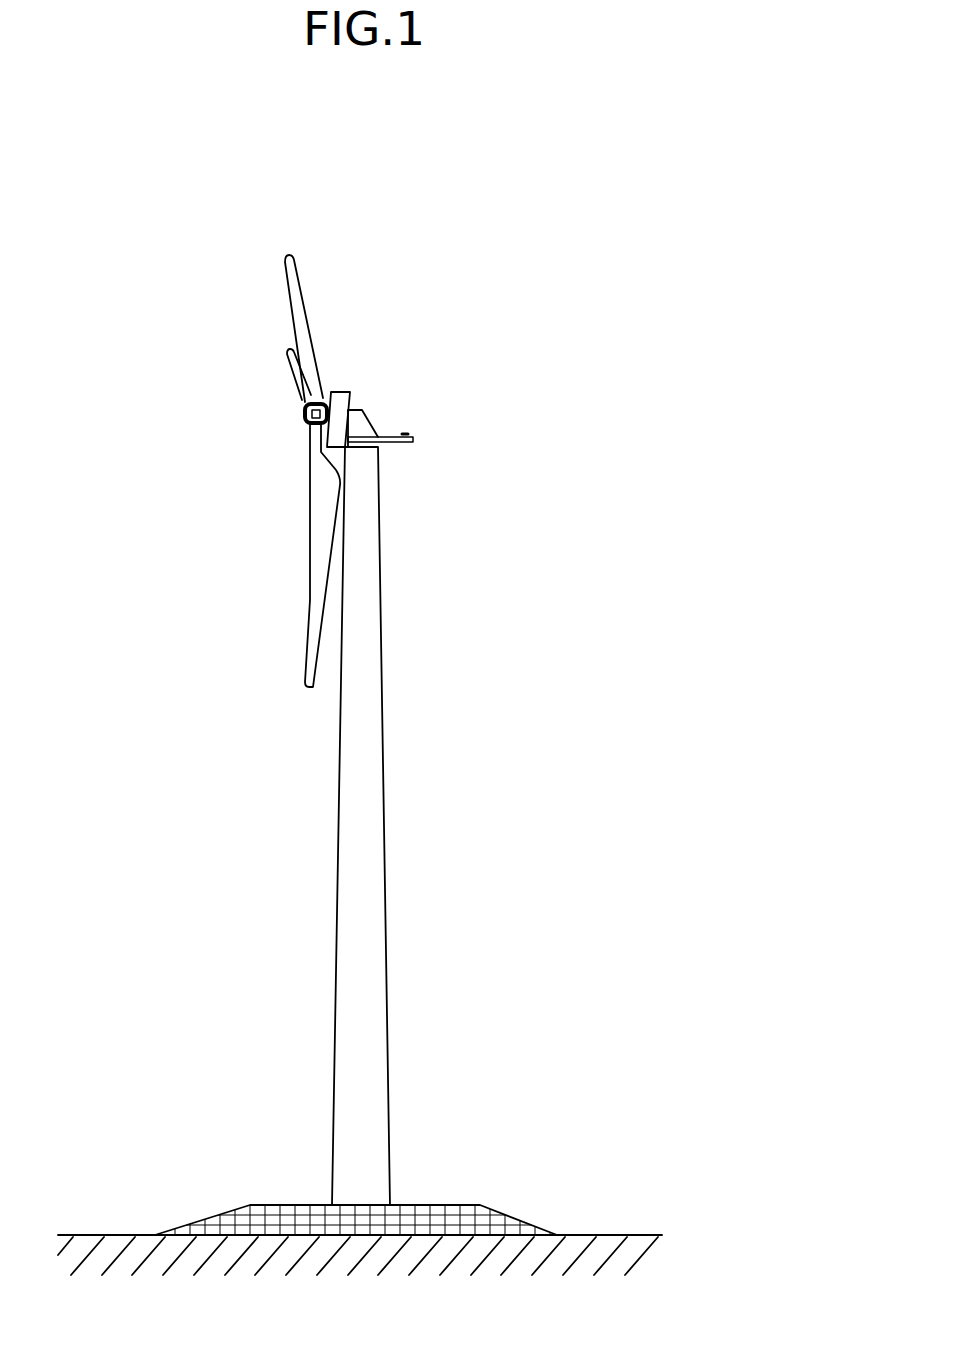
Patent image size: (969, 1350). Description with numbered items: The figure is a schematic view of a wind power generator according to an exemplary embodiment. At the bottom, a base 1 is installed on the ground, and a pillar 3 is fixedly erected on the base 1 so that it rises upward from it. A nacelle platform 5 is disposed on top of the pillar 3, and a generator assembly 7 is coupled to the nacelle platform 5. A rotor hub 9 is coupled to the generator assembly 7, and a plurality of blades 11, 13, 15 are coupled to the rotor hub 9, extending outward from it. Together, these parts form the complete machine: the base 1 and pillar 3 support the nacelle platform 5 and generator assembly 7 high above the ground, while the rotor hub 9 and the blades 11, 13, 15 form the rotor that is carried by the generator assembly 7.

The base 1 is at (355, 1159).
The pillar 3 is at (425, 826).
The nacelle platform 5 is at (378, 417).
The generator assembly 7 is at (371, 356).
The rotor hub 9 is at (255, 453).
The blade 11 is at (261, 554).
The blade 13 is at (243, 328).
The blade 15 is at (237, 379).